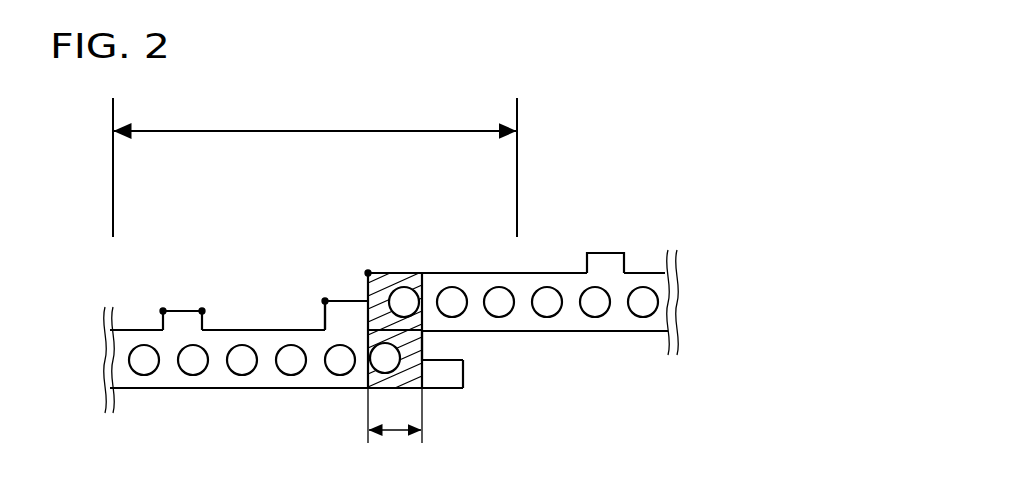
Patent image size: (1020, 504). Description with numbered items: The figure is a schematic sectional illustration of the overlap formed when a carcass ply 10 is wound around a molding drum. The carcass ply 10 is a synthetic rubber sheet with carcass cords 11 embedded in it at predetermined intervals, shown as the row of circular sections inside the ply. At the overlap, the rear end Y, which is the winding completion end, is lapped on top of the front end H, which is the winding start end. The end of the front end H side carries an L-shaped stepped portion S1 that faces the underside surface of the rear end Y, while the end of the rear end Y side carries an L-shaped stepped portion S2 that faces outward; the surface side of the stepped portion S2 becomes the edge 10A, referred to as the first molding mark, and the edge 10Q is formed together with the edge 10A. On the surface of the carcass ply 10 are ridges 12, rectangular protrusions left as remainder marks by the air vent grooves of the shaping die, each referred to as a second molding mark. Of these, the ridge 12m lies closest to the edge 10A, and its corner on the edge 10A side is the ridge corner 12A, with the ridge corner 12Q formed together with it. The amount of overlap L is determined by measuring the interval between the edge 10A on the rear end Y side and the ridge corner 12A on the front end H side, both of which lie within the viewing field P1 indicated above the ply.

The carcass ply 10 is at (268, 327).
The edge 10A is at (367, 272).
The edge 10Q is at (325, 300).
The carcass cords 11 is at (145, 360).
The ridges 12 is at (603, 265).
The ridge 12m is at (170, 318).
The ridge corner 12A is at (202, 311).
The ridge corner 12Q is at (163, 311).
The stepped portion S1 is at (442, 350).
The stepped portion S2 is at (364, 282).
The viewing field P1 is at (315, 167).
The amount of overlap L is at (395, 427).
The rear end Y is at (323, 320).
The front end H is at (467, 387).